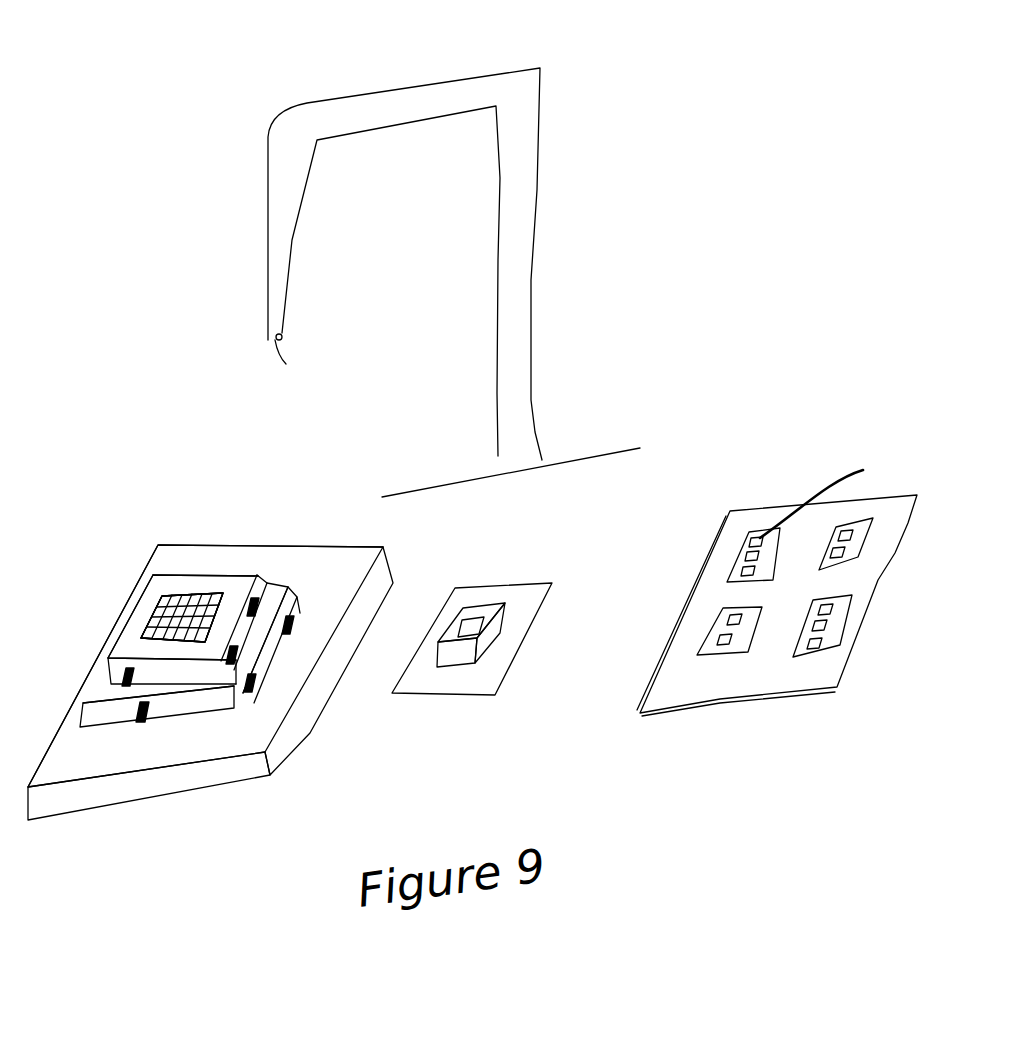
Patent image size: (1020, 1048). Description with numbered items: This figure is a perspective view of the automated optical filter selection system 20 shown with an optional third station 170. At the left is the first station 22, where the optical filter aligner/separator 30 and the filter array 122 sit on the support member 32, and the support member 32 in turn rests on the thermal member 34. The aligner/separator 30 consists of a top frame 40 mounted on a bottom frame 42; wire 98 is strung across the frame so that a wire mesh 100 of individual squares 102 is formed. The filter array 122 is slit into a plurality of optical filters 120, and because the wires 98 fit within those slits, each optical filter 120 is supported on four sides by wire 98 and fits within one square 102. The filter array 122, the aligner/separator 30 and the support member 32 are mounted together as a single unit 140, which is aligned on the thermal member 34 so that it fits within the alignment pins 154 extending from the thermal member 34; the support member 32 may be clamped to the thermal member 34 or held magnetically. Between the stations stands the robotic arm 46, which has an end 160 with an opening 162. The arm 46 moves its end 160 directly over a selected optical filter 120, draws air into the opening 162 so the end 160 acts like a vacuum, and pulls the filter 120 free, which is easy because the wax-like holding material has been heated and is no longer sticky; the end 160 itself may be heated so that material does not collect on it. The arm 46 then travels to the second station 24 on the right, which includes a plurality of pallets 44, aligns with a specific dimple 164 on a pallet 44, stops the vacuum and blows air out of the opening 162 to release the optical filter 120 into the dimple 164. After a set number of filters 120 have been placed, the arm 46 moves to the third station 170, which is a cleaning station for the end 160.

The automated optical filter selection system 20 is at (672, 128).
The first station 22 is at (143, 493).
The second station 24 is at (803, 468).
The optical filter aligner/separator 30 is at (217, 660).
The support member 32 is at (268, 645).
The thermal member 34 is at (345, 570).
The top frame 40 is at (266, 574).
The bottom frame 42 is at (114, 678).
The pallet 44 is at (737, 654).
The robotic arm 46 is at (390, 98).
The wire 98 is at (222, 571).
The wire mesh 100 is at (155, 606).
The square 102 is at (160, 522).
The optical filter 120 is at (182, 556).
The filter array 122 is at (181, 607).
The single unit 140 is at (298, 594).
The alignment pins 154 is at (137, 720).
The end 160 is at (284, 333).
The opening 162 is at (296, 357).
The dimple 164 is at (830, 496).
The third station 170 is at (523, 560).